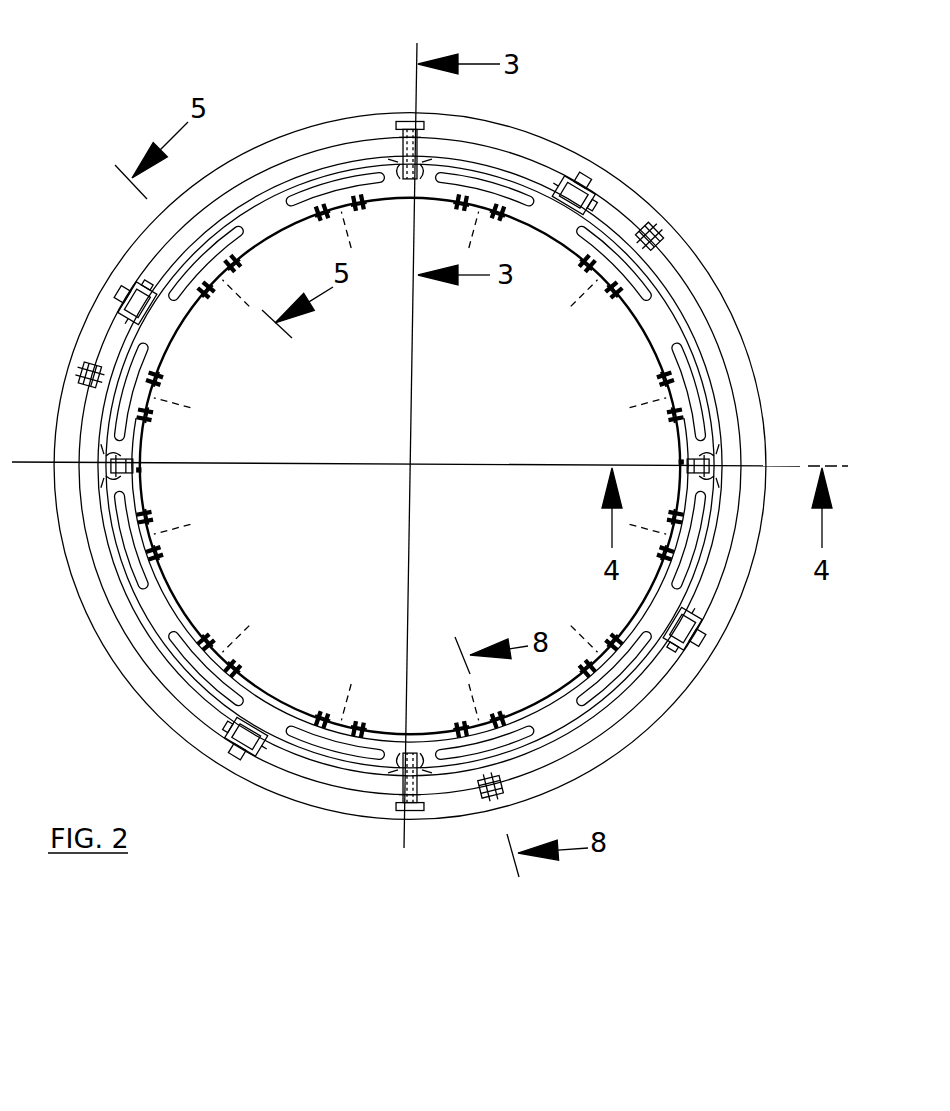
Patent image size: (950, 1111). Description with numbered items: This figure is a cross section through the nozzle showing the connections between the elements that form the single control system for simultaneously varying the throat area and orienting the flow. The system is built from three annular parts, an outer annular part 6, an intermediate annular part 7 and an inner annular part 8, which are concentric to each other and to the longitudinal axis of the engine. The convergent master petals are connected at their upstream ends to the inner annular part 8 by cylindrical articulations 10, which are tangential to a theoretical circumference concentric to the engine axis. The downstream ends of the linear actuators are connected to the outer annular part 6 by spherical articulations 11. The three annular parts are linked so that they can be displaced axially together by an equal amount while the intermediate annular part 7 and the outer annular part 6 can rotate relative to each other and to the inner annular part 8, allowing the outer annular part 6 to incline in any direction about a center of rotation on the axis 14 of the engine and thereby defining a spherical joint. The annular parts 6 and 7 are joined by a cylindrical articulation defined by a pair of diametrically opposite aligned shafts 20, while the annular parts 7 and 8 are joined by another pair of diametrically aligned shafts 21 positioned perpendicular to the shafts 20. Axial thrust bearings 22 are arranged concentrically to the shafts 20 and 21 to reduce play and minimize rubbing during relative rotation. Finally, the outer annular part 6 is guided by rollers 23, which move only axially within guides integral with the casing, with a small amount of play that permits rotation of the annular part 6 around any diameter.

The outer annular part 6 is at (300, 140).
The intermediate annular part 7 is at (583, 222).
The inner annular part 8 is at (553, 712).
The cylindrical articulations 10 is at (610, 300).
The spherical articulations 11 is at (657, 227).
The axis 14 is at (408, 463).
The shafts 20 is at (407, 122).
The shafts 21 is at (703, 456).
The axial thrust bearings 22 is at (400, 160).
The rollers 23 is at (576, 172).